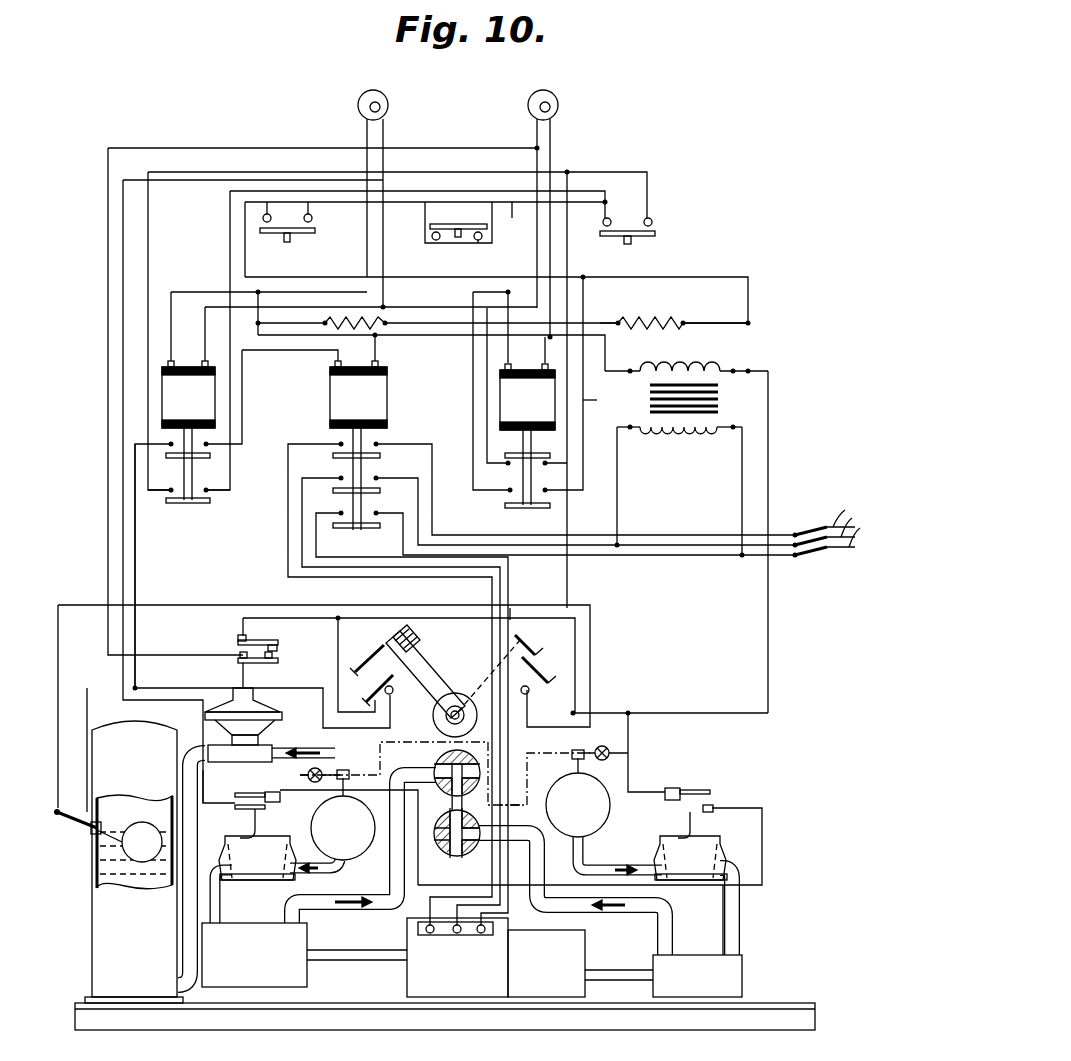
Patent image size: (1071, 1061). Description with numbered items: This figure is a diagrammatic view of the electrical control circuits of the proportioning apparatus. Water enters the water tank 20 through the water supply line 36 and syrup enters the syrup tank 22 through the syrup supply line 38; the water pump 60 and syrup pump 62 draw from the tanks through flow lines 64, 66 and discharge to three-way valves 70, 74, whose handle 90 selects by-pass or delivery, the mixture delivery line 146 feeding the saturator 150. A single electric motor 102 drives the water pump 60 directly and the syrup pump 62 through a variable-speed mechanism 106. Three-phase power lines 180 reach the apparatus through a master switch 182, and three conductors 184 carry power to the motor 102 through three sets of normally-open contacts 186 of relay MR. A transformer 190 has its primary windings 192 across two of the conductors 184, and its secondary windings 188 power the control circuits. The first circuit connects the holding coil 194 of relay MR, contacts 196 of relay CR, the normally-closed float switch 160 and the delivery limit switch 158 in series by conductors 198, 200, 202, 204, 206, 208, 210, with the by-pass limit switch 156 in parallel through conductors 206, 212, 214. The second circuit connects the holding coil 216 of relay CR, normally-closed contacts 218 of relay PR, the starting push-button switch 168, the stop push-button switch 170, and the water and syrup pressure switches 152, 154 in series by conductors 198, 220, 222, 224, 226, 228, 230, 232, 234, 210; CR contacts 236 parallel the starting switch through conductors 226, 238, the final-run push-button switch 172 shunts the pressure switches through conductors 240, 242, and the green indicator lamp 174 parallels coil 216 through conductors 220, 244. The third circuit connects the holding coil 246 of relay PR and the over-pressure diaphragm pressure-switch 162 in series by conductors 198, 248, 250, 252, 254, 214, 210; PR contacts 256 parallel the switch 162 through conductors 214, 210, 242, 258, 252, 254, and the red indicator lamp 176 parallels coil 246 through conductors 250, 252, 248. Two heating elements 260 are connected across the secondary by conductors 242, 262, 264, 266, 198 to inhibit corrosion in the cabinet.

The green indicator lamp 174 is at (380, 90).
The red indicator lamp 176 is at (556, 94).
The conductor 254 is at (222, 138).
The conductor 226 is at (612, 163).
The conductor 238 is at (230, 231).
The conductor 240 is at (315, 214).
The push-button switch 172 is at (305, 240).
The push-button switch 170 is at (448, 226).
The conductor 228 is at (519, 219).
The conductor 224 is at (573, 240).
The push-button switch 168 is at (655, 227).
The conductor 244 is at (383, 241).
The conductor 252 is at (536, 257).
The conductor 230 is at (108, 281).
The conductor 220 is at (188, 292).
The conductor 222 is at (430, 307).
The conductor 250 is at (508, 298).
The conductor 264 is at (598, 321).
The electrical heating element 260 is at (345, 327).
The conductor 262 is at (718, 316).
The conductor 242 is at (695, 271).
The holding coil 216 is at (188, 346).
The conductor 202 is at (278, 351).
The conductor 200 is at (378, 350).
The conductor 198 is at (462, 343).
The conductor 248 is at (545, 350).
The secondary windings 188 is at (675, 370).
The conductor 266 is at (277, 325).
The holding coil 194 is at (388, 374).
The holding coil 246 is at (500, 377).
The conductor 258 is at (609, 399).
The transformer 190 is at (725, 399).
The normally closed contacts 218 is at (505, 461).
The primary windings 192 is at (687, 440).
The normally-open contacts 196 is at (212, 456).
The normally-open contacts 186 is at (342, 488).
The normally-open contacts 256 is at (550, 492).
The normally-open contacts 236 is at (210, 498).
The master switch 182 is at (800, 528).
The power lines 180 is at (838, 520).
The conductor 204 is at (135, 562).
The conductors 184 is at (578, 548).
The conductor 208 is at (196, 605).
The diaphragm pressure-switch 162 is at (278, 646).
The conductor 212 is at (338, 645).
The conductor 214 is at (435, 625).
The cam 90 is at (420, 672).
The limit switch 156 is at (355, 668).
The limit switch 158 is at (550, 660).
The conductor 210 is at (768, 670).
The conductor 206 is at (205, 682).
The mixture delivery line 146 is at (203, 776).
The water supply line 36 is at (300, 777).
The water tank 20 is at (318, 822).
The pressure actuated diaphragm switch 152 is at (240, 812).
The three-way valve 70 is at (440, 790).
The syrup supply line 38 is at (610, 750).
The conductor 234 is at (628, 765).
The syrup tank 22 is at (610, 830).
The pressure actuated diaphragm switch 154 is at (715, 810).
The float switch 160 is at (80, 830).
The flow line 64 is at (226, 880).
The three-way valve 74 is at (442, 852).
The conductor 232 is at (695, 885).
The flow line 66 is at (742, 912).
The saturator 150 is at (92, 968).
The water pump 60 is at (307, 982).
The electric motor 102 is at (407, 984).
The variable-speed mechanism 106 is at (585, 951).
The syrup pump 62 is at (742, 982).